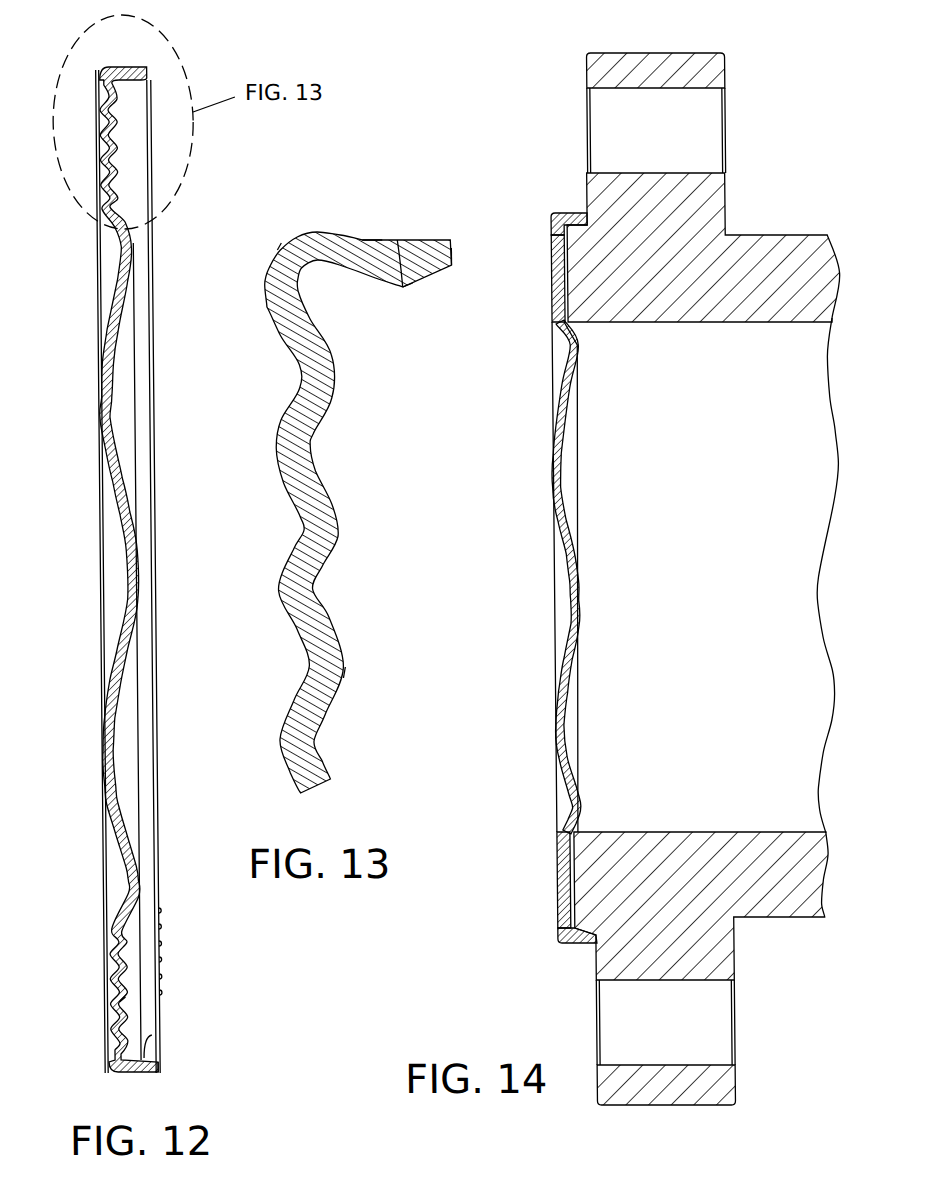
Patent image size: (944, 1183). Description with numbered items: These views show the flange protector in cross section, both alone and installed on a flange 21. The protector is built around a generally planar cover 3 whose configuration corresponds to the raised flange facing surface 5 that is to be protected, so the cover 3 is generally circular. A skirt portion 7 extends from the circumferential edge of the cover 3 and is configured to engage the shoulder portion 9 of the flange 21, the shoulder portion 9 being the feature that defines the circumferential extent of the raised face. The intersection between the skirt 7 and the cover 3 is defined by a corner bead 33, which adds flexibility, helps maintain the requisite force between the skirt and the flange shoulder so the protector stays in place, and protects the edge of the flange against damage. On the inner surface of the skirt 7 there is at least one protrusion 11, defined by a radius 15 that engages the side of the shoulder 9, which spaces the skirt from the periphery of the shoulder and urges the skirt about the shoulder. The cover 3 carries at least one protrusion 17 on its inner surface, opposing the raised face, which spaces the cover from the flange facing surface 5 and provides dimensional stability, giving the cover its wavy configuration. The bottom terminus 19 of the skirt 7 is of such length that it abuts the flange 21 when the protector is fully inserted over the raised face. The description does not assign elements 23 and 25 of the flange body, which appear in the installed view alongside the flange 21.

In FIG. 13, the cover 3 is at (273, 445).
In FIG. 14, the flange facing surface 5 is at (549, 312).
In FIG. 12, the skirt portion 7 is at (122, 63).
In FIG. 13, the skirt portion 7 is at (360, 240).
In FIG. 14, the skirt portion 7 is at (576, 212).
In FIG. 14, the shoulder portion 9 is at (576, 232).
In FIG. 12, the protrusion 11 is at (142, 1035).
In FIG. 13, the protrusion 11 is at (400, 288).
In FIG. 13, the radius 15 is at (395, 240).
In FIG. 12, the protrusion 17 is at (116, 997).
In FIG. 13, the protrusion 17 is at (339, 667).
In FIG. 14, the protrusion 17 is at (569, 857).
In FIG. 12, the bottom terminus 19 is at (148, 1068).
In FIG. 13, the bottom terminus 19 is at (451, 248).
In FIG. 14, the flange 21 is at (616, 58).
In FIG. 14, the cavity 23 is at (706, 128).
In FIG. 14, the housing 25 is at (799, 405).
In FIG. 13, the bead 33 is at (279, 243).